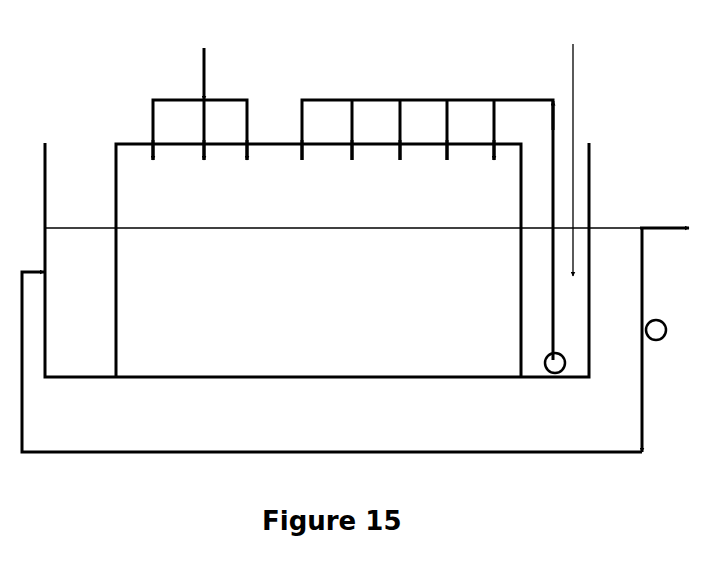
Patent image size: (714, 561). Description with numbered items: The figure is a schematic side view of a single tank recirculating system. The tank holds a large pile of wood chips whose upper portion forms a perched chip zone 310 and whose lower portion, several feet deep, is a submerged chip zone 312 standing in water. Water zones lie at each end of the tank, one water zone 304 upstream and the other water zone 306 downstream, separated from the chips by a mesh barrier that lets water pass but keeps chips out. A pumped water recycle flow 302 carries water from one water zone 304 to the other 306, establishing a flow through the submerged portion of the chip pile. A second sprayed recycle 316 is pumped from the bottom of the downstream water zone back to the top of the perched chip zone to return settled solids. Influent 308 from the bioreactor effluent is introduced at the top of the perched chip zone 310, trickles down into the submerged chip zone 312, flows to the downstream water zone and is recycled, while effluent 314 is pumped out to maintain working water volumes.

The pumped water recycle flow 302 is at (344, 340).
The water zone 304 is at (317, 260).
The water zone 306 is at (569, 149).
The influent 308 is at (200, 91).
The perched chip zone 310 is at (318, 260).
The submerged chip zone 312 is at (342, 270).
The effluent 314 is at (667, 209).
The sprayed recycle 316 is at (433, 223).